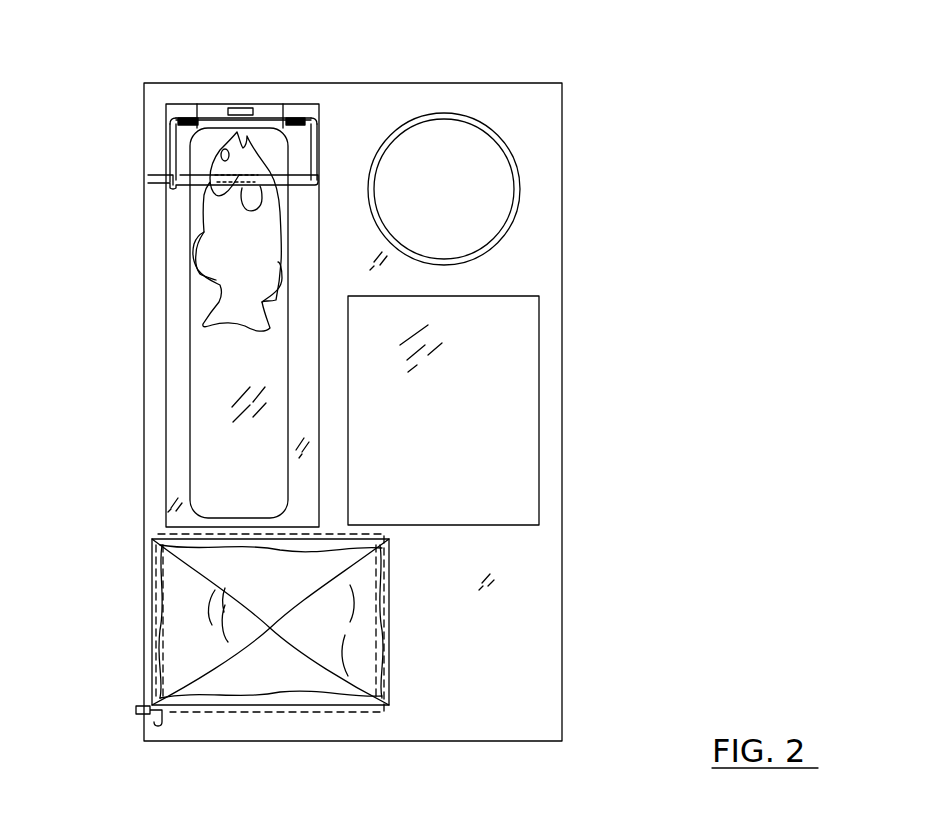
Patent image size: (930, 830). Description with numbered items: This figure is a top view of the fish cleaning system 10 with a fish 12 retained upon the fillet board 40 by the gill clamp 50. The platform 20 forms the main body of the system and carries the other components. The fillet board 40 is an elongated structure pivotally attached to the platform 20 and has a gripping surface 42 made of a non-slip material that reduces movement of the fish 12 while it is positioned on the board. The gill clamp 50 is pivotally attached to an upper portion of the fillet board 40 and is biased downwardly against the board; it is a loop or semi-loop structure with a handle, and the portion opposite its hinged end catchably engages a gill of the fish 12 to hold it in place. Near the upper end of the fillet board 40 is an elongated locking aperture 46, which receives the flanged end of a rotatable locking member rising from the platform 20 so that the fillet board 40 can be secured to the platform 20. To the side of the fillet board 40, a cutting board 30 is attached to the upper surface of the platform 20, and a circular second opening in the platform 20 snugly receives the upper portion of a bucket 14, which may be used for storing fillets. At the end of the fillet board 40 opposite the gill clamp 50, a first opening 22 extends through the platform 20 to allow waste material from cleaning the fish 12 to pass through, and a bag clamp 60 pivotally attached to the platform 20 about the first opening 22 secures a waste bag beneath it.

The fish cleaning system 10 is at (772, 82).
The fish 12 is at (230, 295).
The bucket 14 is at (517, 187).
The platform 20 is at (543, 693).
The first opening 22 is at (305, 688).
The cutting board 30 is at (520, 448).
The fillet board 40 is at (170, 258).
The gripping surface 42 is at (198, 373).
The locking aperture 46 is at (242, 108).
The gill clamp 50 is at (168, 128).
The bag clamp 60 is at (135, 710).